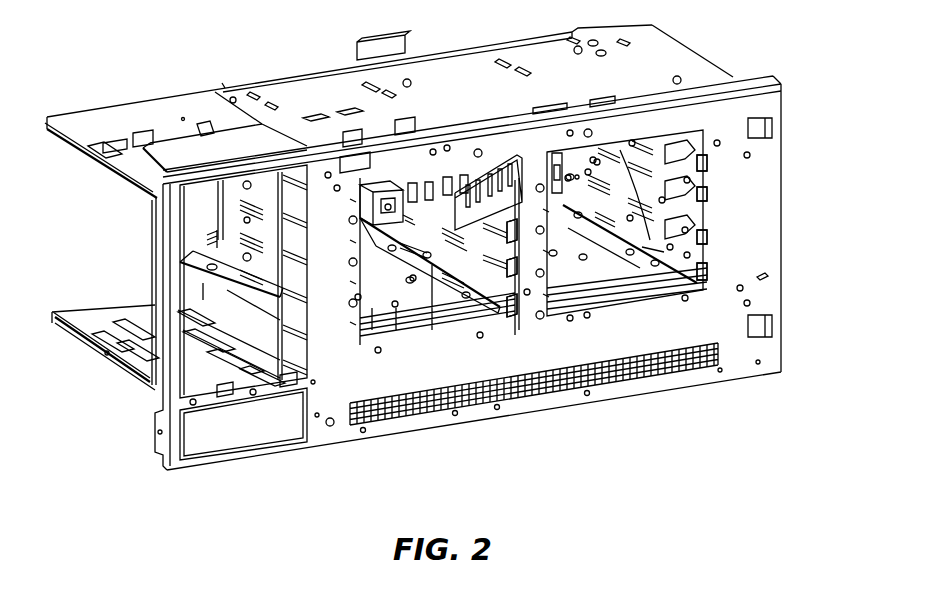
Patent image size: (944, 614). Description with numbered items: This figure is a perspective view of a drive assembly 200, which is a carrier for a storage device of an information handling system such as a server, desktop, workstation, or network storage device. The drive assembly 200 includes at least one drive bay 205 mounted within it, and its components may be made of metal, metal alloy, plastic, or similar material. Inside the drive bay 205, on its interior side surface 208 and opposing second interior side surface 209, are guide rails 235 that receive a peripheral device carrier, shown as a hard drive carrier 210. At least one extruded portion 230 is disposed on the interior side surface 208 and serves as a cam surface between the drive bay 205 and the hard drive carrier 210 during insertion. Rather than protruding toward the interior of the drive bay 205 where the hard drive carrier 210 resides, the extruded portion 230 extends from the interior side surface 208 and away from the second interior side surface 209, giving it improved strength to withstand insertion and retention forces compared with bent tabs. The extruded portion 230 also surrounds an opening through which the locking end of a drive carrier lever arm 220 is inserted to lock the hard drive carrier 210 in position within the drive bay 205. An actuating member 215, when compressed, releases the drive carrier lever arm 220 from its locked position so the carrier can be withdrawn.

The drive assembly 200 is at (147, 62).
The drive bay 205 is at (395, 307).
The interior side surface 208 is at (427, 258).
The second interior side surface 209 is at (358, 300).
The hard drive carrier 210 is at (437, 170).
The actuating member 215 is at (393, 200).
The drive carrier lever arm 220 is at (517, 160).
The extruded portion 230 is at (710, 262).
The guide rails 235 is at (655, 243).